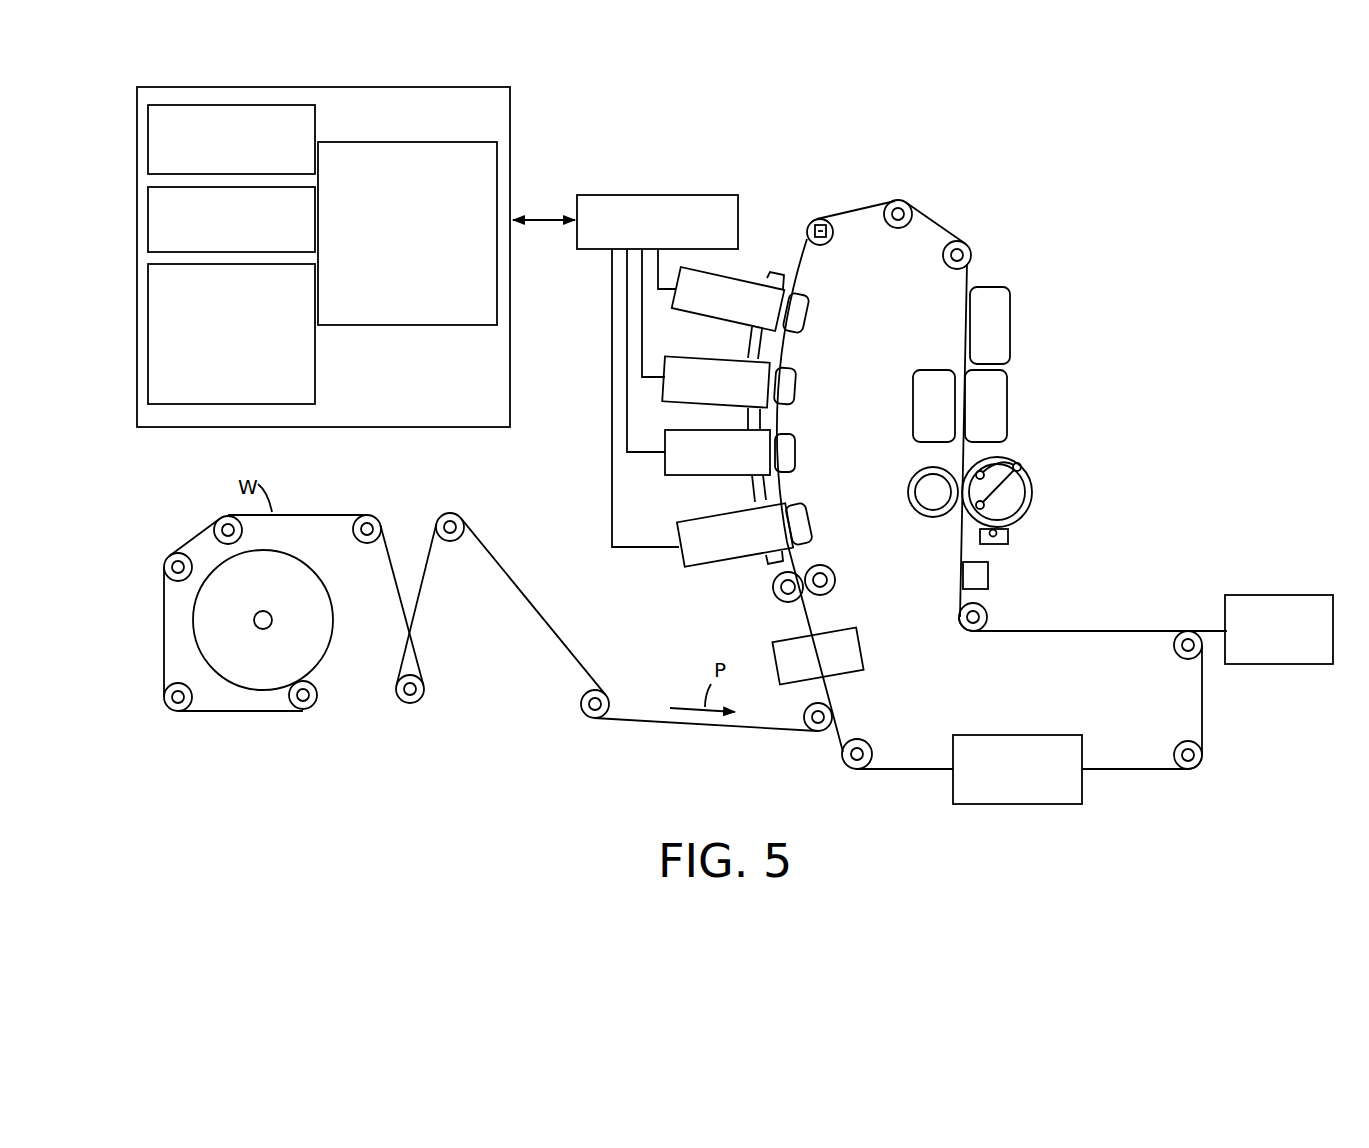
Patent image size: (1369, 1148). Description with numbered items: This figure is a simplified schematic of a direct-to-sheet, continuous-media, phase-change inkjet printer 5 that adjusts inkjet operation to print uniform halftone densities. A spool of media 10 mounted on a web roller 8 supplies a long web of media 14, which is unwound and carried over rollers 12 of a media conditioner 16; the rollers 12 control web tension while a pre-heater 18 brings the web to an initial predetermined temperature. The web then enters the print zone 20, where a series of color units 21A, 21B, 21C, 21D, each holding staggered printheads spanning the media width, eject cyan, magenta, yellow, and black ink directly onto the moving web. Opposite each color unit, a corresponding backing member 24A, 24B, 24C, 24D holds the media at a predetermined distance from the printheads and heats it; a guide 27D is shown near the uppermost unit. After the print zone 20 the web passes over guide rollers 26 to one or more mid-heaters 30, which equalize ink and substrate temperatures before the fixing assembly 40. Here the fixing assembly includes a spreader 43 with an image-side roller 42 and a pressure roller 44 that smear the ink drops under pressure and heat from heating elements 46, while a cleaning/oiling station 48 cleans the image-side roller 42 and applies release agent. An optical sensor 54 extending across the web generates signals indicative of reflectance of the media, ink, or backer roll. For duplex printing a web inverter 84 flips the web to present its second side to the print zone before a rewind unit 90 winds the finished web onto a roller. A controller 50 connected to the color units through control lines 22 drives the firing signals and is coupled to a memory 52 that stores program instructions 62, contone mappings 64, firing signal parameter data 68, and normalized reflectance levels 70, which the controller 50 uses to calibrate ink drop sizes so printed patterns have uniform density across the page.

The inkjet printer 5 is at (1076, 172).
The web roller 8 is at (263, 628).
The spool of media 10 is at (336, 618).
The rollers 12 is at (453, 540).
The web of media 14 is at (292, 515).
The media conditioner 16 is at (596, 645).
The pre-heater 18 is at (862, 642).
The print zone 20 is at (600, 473).
The color unit 21A is at (732, 563).
The color unit 21B is at (713, 478).
The color unit 21C is at (704, 402).
The color unit 21D is at (713, 316).
The control lines 22 is at (645, 270).
The backing member 24A is at (811, 517).
The backing member 24B is at (797, 449).
The backing member 24C is at (797, 389).
The backing member 24D is at (808, 309).
The guide rollers 26 is at (895, 227).
The web guide 27D is at (832, 235).
The mid-heater 30 is at (1026, 315).
The fixing assembly 40 is at (1027, 432).
The image-side roller 42 is at (1030, 504).
The spreader 43 is at (1029, 531).
The pressure roller 44 is at (923, 498).
The heating elements 46 is at (1021, 465).
The cleaning/oiling station 48 is at (993, 543).
The controller 50 is at (654, 192).
The memory 52 is at (512, 123).
The optical sensor 54 is at (977, 574).
The program instructions 62 is at (137, 148).
The input contone level to output contone level mappings 64 is at (404, 325).
The firing signal parameter data 68 is at (137, 222).
The normalized reflectance levels 70 is at (137, 335).
The web inverter 84 is at (1017, 733).
The rewind unit 90 is at (1267, 593).